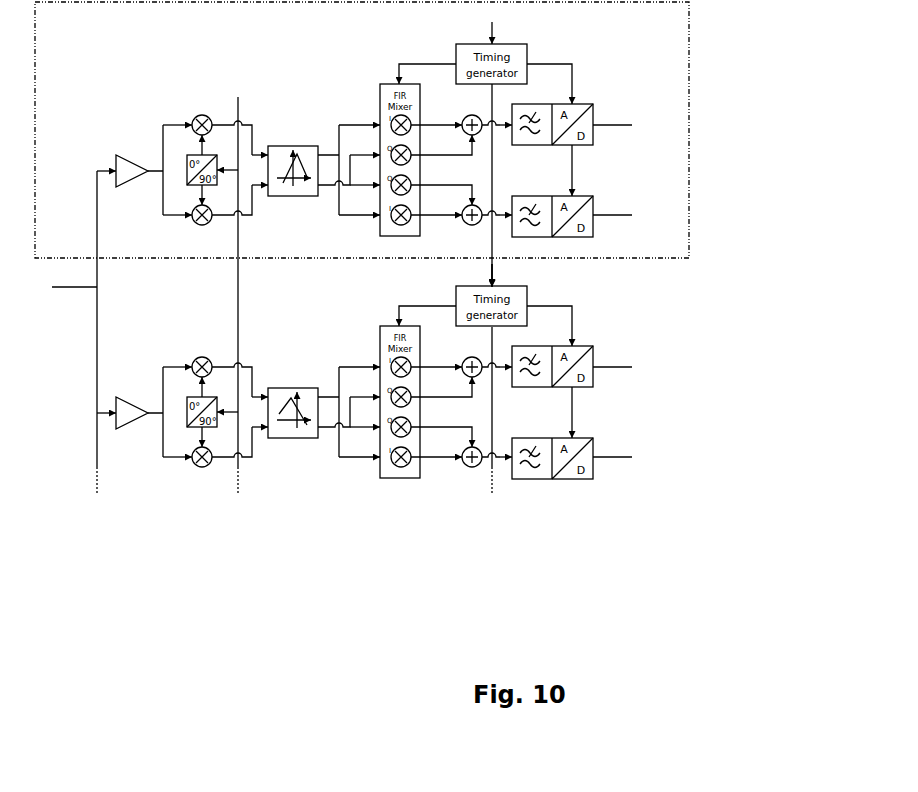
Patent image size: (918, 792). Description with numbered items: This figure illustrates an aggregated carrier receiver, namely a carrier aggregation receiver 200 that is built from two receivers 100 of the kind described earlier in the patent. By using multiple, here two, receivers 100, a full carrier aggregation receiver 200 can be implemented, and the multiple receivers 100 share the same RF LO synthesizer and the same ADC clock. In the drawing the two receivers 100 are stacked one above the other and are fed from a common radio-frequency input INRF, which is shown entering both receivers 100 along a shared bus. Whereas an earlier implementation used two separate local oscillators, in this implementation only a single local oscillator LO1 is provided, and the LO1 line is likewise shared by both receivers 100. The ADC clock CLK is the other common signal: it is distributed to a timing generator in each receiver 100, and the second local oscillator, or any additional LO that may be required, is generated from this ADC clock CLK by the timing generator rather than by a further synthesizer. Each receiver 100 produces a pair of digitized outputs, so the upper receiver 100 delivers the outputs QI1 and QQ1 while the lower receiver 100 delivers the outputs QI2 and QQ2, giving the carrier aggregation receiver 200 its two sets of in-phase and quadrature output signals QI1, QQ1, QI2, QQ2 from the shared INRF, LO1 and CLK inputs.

The receiver 100 is at (362, 130).
The carrier aggregation receiver 200 is at (366, 471).
The RF input signal INRF is at (71, 332).
The local oscillator LO1 is at (233, 288).
The clock signal CLK is at (498, 251).
The in-phase output of first receiver QI1 is at (612, 118).
The quadrature output of first receiver QQ1 is at (614, 208).
The in-phase output of second receiver QI2 is at (612, 360).
The quadrature output of second receiver QQ2 is at (614, 450).